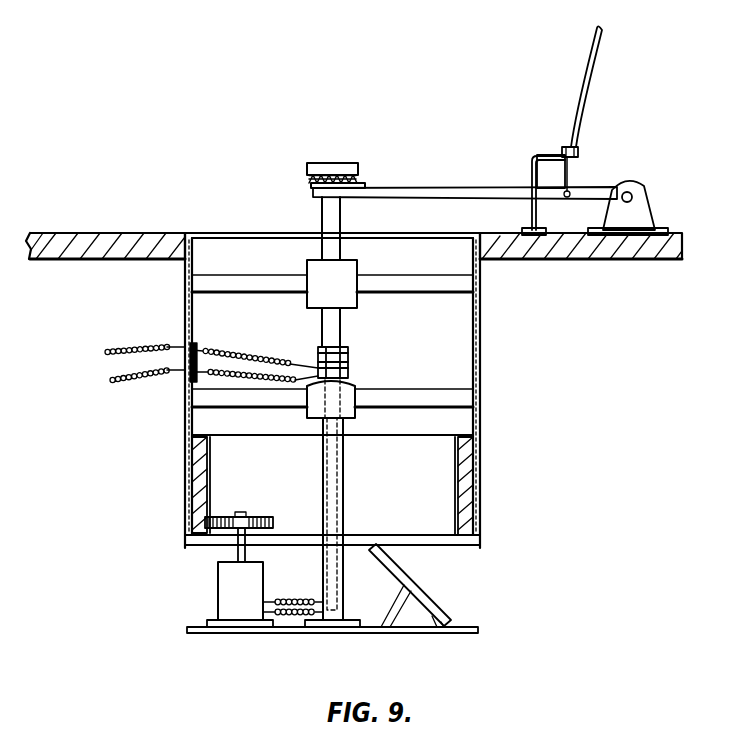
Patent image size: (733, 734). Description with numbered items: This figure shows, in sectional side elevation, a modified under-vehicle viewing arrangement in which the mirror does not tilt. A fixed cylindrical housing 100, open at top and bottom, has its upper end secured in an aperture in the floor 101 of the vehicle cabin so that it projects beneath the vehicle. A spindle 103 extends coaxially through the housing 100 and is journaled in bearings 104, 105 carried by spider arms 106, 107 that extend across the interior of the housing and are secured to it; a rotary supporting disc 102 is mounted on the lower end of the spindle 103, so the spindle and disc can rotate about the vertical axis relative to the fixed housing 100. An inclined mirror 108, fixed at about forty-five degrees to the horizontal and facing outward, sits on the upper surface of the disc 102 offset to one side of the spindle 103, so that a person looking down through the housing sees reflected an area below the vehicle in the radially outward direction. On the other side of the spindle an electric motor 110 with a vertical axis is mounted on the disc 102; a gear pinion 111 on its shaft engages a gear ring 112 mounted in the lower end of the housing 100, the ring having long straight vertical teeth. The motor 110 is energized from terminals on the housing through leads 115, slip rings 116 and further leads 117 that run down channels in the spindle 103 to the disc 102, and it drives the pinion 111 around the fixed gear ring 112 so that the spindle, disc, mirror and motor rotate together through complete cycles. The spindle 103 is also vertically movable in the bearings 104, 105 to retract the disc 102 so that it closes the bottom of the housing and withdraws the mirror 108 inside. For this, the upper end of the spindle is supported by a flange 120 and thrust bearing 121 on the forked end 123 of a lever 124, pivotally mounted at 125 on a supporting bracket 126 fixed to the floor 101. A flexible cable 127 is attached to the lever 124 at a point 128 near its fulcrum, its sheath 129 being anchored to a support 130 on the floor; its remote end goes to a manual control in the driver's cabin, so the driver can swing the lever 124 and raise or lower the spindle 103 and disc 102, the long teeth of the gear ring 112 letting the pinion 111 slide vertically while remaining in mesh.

The fixed cylindrical housing 100 is at (481, 340).
The floor 101 is at (104, 247).
The rotary supporting disc 102 is at (195, 634).
The spindle 103 is at (342, 217).
The bearing 104 is at (358, 270).
The bearing 105 is at (357, 414).
The spider arm 106 is at (263, 285).
The spider arm 107 is at (427, 397).
The inclined mirror 108 is at (422, 603).
The electric motor 110 is at (232, 604).
The gear pinion 111 is at (264, 518).
The gear ring 112 is at (210, 458).
The leads 115 is at (272, 361).
The slip rings 116 is at (359, 362).
The further leads 117 is at (332, 497).
The flange 120 is at (340, 167).
The thrust bearing 121 is at (308, 181).
The forked end 123 is at (318, 193).
The lever 124 is at (452, 189).
The pivot 125 is at (629, 191).
The supporting bracket 126 is at (652, 210).
The flexible cable 127 is at (570, 178).
The attachment point 128 is at (567, 198).
The sheath 129 is at (588, 70).
The support 130 is at (549, 160).